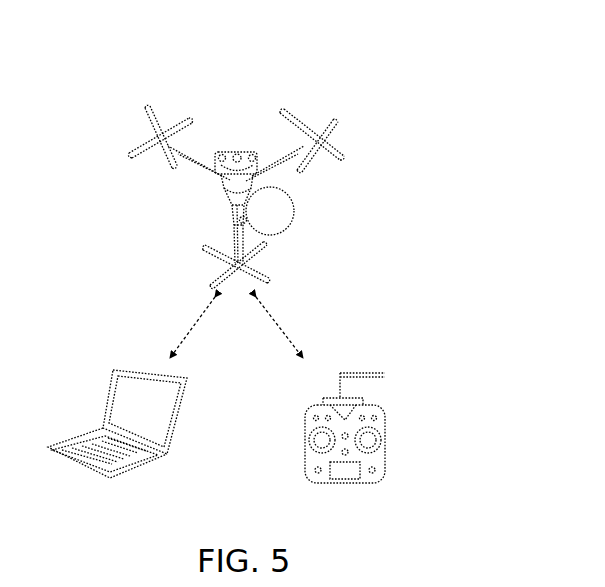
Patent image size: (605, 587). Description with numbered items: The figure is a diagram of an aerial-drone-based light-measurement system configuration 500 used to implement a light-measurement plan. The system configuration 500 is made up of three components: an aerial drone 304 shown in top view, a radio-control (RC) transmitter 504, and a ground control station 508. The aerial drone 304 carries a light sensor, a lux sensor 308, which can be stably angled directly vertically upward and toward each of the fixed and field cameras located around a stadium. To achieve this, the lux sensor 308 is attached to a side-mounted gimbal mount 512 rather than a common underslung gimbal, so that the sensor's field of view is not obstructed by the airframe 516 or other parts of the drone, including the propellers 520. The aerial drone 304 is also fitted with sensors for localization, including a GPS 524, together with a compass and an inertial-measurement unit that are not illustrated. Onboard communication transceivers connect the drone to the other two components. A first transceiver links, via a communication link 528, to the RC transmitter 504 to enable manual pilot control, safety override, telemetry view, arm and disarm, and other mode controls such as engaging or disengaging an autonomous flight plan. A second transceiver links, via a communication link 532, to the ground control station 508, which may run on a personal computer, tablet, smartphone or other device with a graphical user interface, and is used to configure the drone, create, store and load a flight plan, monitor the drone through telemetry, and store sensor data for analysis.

The system configuration 500 is at (418, 106).
The aerial drone 304 is at (228, 216).
The lux sensor 308 is at (235, 151).
The side-mounted gimbal mount 512 is at (262, 165).
The GPS 524 is at (248, 222).
The airframe 516 is at (232, 222).
The propellers 520 is at (148, 125).
The communication link 532 is at (192, 326).
The communication link 528 is at (282, 330).
The ground control station 508 is at (57, 447).
The radio-control (RC) transmitter 504 is at (387, 435).